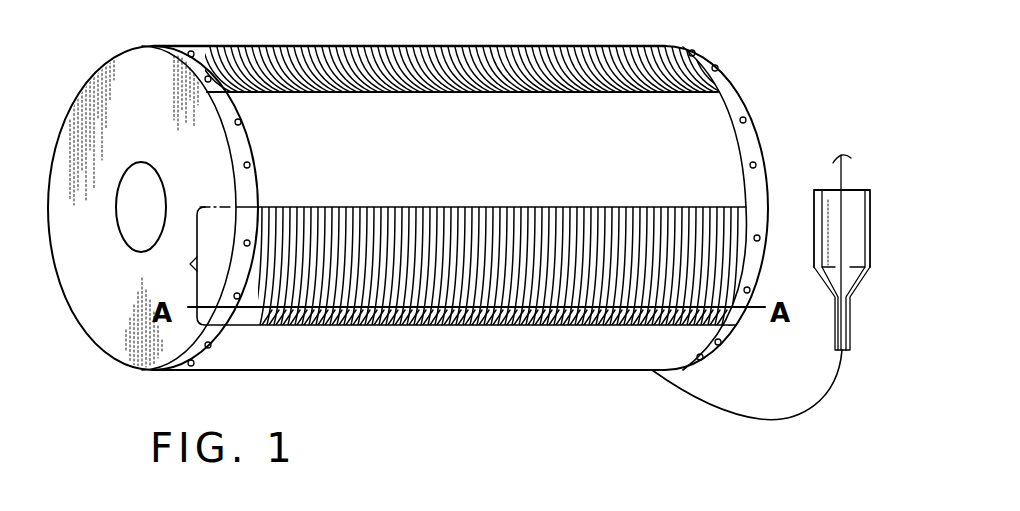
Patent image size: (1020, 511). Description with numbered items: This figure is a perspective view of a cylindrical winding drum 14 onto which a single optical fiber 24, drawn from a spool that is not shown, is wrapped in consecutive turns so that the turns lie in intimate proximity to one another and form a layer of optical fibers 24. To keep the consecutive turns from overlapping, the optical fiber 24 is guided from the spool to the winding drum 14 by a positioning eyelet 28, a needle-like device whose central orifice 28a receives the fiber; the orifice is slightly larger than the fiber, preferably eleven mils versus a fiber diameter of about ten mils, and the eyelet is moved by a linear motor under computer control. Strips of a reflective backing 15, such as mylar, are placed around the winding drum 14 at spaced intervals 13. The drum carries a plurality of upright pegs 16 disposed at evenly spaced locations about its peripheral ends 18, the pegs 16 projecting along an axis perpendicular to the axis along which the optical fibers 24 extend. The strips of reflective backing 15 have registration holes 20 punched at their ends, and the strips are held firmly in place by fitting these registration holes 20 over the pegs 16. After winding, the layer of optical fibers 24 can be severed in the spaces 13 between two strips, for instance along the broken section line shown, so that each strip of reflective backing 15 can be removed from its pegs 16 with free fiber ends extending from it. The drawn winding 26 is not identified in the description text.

The spaced intervals 13 is at (451, 266).
The winding drum 14 is at (105, 365).
The reflective backing 15 is at (712, 152).
The upright pegs 16 is at (192, 50).
The peripheral ends 18 is at (700, 54).
The registration holes 20 is at (206, 80).
The optical fiber 24 is at (326, 64).
The inner winding 26 is at (460, 310).
The positioning eyelet 28 is at (866, 203).
The central orifice 28a is at (845, 360).